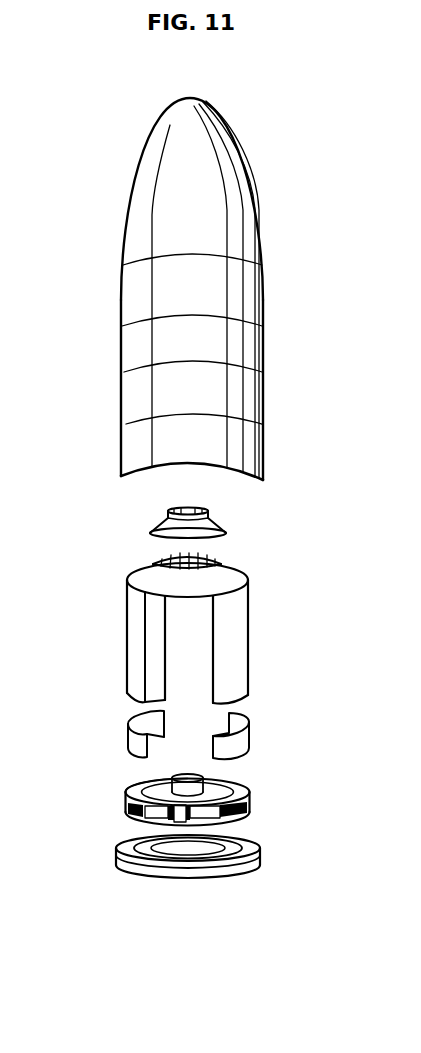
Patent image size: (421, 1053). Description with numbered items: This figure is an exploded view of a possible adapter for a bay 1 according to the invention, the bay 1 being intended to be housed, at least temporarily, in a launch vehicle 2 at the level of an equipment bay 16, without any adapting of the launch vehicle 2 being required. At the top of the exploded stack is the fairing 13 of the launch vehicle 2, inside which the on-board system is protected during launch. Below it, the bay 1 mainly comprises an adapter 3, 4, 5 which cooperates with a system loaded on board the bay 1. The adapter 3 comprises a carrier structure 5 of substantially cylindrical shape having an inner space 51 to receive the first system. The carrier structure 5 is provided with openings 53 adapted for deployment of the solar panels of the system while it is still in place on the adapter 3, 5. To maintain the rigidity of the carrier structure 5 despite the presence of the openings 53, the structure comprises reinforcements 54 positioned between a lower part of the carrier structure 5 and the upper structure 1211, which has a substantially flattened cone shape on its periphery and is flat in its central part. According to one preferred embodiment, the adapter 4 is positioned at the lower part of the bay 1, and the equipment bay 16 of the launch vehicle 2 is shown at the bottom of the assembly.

The bay 1 is at (266, 803).
The launch vehicle 2 is at (270, 308).
The adapter 3 is at (216, 788).
The adapter 4 is at (134, 822).
The carrier structure 5 is at (261, 643).
The fairing 13 is at (178, 232).
The equipment bay 16 is at (272, 857).
The inner space 51 is at (199, 643).
The openings 53 is at (176, 675).
The reinforcements 54 is at (264, 737).
The upper structure 1211 is at (137, 792).